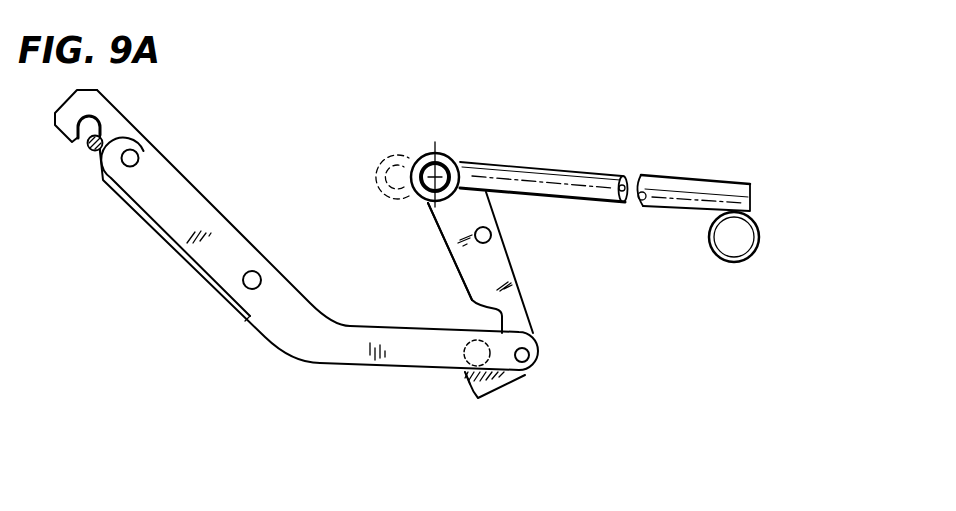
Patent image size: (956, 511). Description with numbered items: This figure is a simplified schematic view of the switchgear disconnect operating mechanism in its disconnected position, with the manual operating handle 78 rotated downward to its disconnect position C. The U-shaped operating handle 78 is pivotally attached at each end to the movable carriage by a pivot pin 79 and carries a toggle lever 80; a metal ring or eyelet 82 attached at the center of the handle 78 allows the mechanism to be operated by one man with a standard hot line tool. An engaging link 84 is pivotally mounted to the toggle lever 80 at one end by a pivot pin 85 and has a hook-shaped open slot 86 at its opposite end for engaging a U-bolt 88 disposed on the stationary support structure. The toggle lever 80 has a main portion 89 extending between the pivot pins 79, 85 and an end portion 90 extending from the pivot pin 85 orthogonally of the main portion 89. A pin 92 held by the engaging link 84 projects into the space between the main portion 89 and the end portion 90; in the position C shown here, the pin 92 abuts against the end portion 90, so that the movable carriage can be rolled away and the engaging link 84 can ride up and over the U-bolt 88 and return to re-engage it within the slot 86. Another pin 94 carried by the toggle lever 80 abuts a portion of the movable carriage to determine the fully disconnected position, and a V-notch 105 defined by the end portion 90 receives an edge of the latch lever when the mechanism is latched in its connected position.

The manual operating handle 78 is at (580, 175).
The pivot pin 79 is at (437, 177).
The toggle lever 80 is at (528, 313).
The metal ring or eyelet 82 is at (760, 237).
The engaging link 84 is at (300, 343).
The pivot pin 85 is at (529, 354).
The hook-shaped open slot 86 is at (81, 144).
The U-bolt 88 is at (103, 143).
The main portion 89 is at (470, 273).
The end portion 90 is at (503, 390).
The pin 92 is at (462, 363).
The pin 94 is at (492, 233).
The V-notch 105 is at (470, 384).
The disconnect position C is at (748, 198).